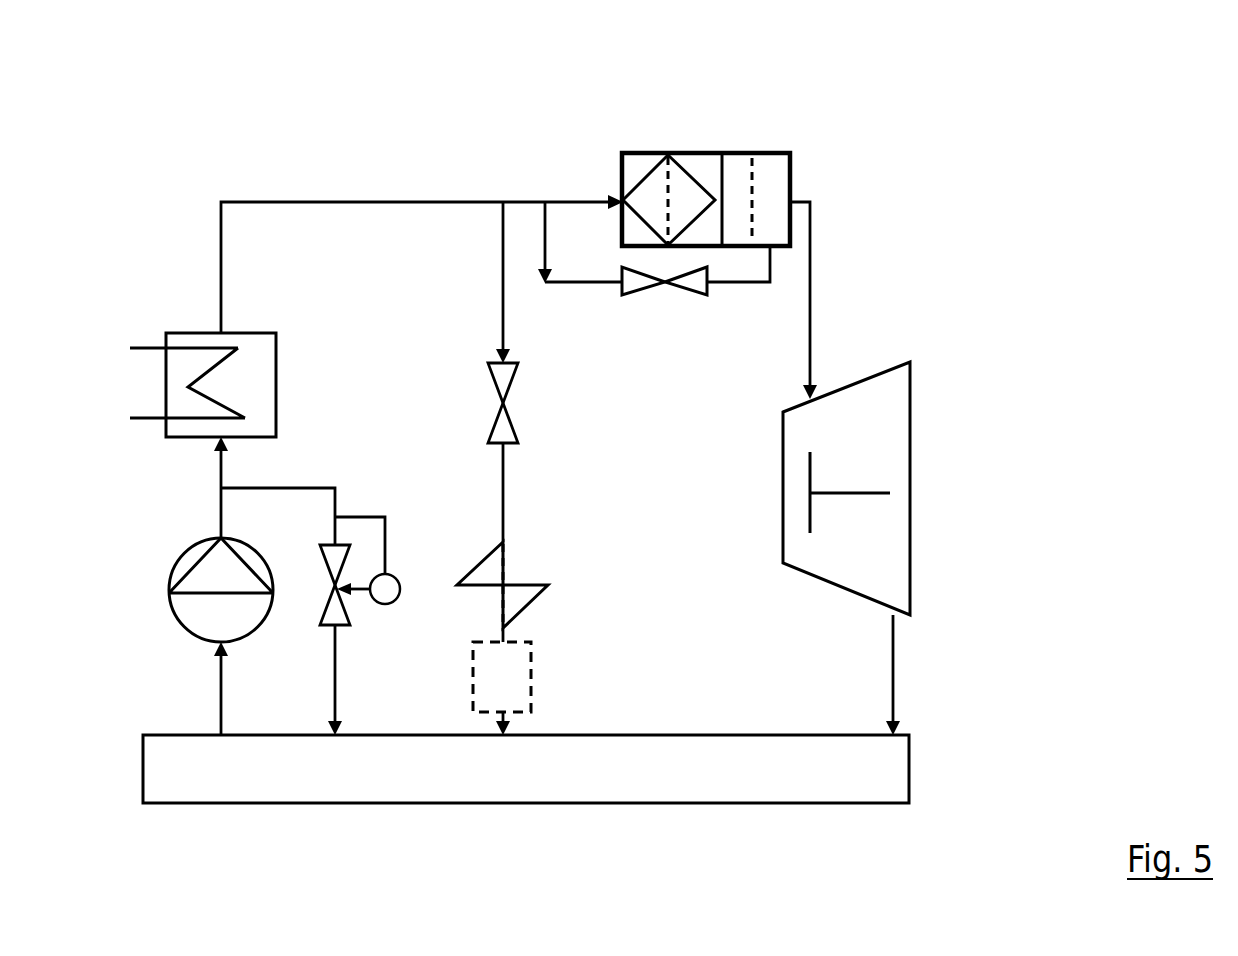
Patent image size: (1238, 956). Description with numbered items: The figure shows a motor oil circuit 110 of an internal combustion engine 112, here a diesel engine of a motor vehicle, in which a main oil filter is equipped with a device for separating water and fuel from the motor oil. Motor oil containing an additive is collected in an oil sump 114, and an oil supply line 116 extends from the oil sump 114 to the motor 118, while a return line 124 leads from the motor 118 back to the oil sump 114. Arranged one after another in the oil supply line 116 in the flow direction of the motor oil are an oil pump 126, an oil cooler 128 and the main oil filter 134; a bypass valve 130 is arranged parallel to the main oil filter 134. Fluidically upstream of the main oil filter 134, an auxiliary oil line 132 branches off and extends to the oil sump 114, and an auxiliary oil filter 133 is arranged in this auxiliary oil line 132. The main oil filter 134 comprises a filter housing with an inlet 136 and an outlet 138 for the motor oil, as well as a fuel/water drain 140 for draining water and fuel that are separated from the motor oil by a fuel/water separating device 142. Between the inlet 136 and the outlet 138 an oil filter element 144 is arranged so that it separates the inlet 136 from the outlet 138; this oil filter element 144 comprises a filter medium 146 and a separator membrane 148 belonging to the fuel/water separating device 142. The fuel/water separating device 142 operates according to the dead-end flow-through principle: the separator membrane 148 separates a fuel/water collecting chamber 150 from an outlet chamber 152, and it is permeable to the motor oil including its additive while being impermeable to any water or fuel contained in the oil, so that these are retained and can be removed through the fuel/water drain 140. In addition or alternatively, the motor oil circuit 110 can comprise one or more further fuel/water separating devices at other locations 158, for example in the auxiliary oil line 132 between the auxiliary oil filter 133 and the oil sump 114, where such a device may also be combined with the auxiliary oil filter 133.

The motor oil circuit 110 is at (252, 190).
The internal combustion engine 112 is at (166, 112).
The oil sump 114 is at (892, 775).
The oil supply line 116 is at (422, 200).
The motor 118 is at (870, 468).
The return line 124 is at (895, 655).
The oil pump 126 is at (166, 587).
The oil cooler 128 is at (177, 398).
The bypass valve 130 is at (648, 292).
The auxiliary oil line 132 is at (505, 490).
The auxiliary oil filter 133 is at (523, 585).
The main oil filter 134 is at (700, 140).
The inlet 136 is at (620, 196).
The outlet 138 is at (810, 152).
The fuel/water drain 140 is at (738, 247).
The fuel/water separating device 142 is at (780, 208).
The oil filter element 144 is at (648, 192).
The filter medium 146 is at (625, 226).
The separator membrane 148 is at (755, 222).
The fuel/water collecting chamber 150 is at (738, 172).
The outlet chamber 152 is at (772, 172).
The other locations 158 is at (507, 677).